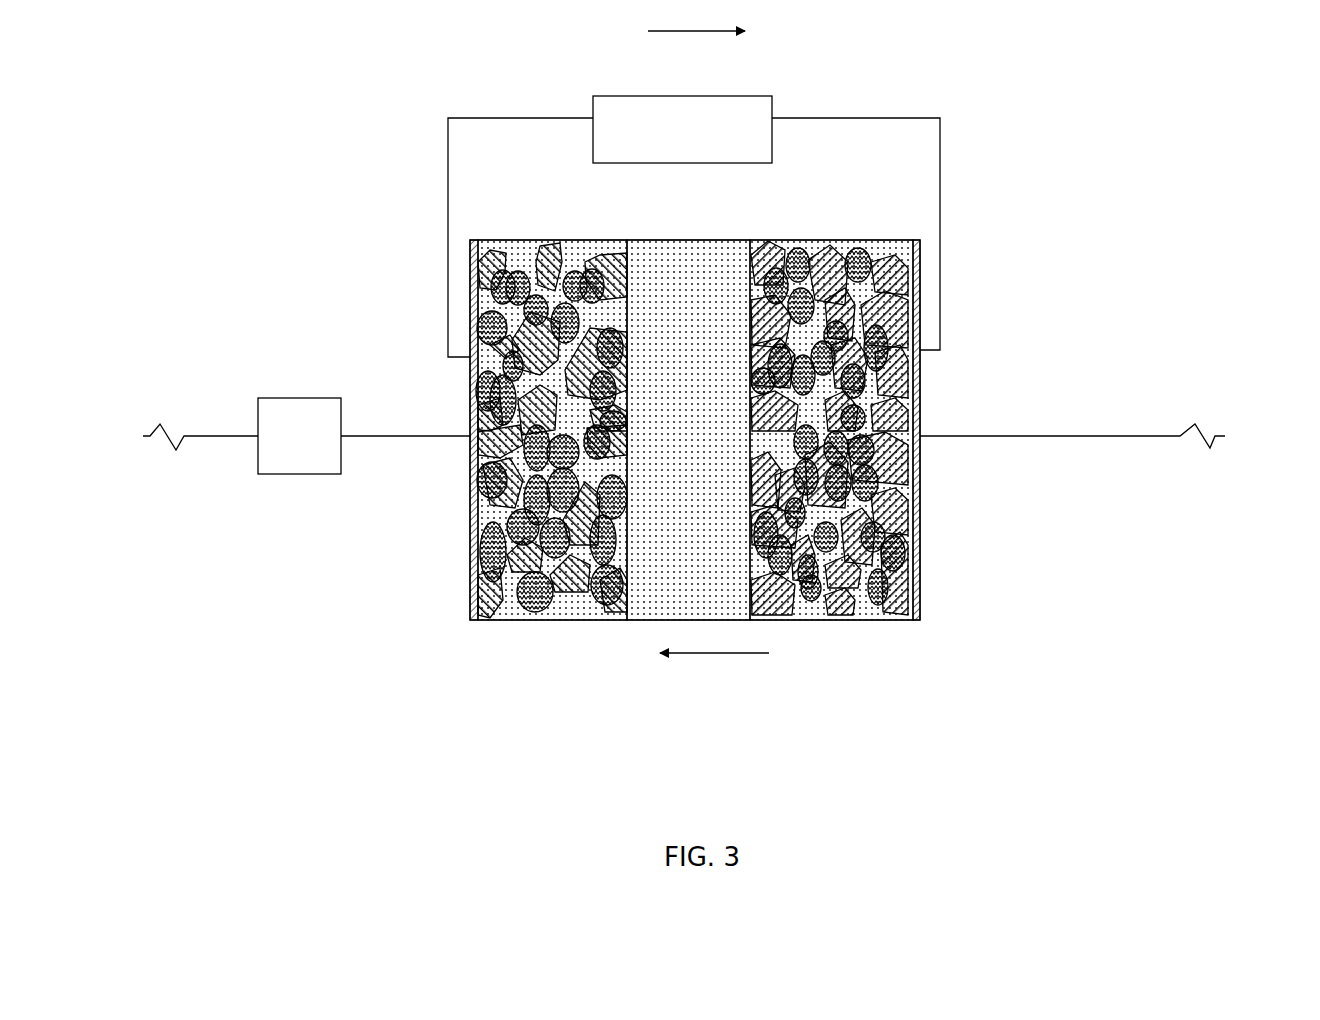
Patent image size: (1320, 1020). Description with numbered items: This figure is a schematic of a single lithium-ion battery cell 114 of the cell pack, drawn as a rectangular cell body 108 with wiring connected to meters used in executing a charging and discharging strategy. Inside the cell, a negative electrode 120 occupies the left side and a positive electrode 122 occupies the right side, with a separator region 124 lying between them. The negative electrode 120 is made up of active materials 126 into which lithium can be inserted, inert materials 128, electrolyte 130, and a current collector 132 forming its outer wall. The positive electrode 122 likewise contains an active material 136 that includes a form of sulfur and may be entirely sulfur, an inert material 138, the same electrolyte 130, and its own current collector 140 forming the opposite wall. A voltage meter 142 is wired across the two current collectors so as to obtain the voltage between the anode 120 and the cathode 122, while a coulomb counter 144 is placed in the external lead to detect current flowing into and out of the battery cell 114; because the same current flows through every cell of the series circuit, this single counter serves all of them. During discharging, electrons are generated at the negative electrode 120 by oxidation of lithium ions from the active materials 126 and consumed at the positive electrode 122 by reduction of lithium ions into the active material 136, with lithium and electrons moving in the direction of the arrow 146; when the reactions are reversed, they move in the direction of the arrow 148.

The electrochemical cell 108 is at (434, 389).
The lithium-ion battery cell 114 is at (1174, 165).
The negative electrode 120 is at (355, 264).
The positive electrode 122 is at (1038, 522).
The separator region 124 is at (640, 620).
The active materials 126 is at (472, 505).
The inert materials 128 is at (620, 255).
The electrolyte 130 is at (583, 250).
The current collector 132 is at (470, 578).
The active material 136 is at (800, 250).
The inert material 138 is at (893, 244).
The current collector 140 is at (920, 460).
The voltage meter 142 is at (765, 96).
The coulomb counter 144 is at (268, 398).
The arrow 146 is at (648, 31).
The arrow 148 is at (688, 655).